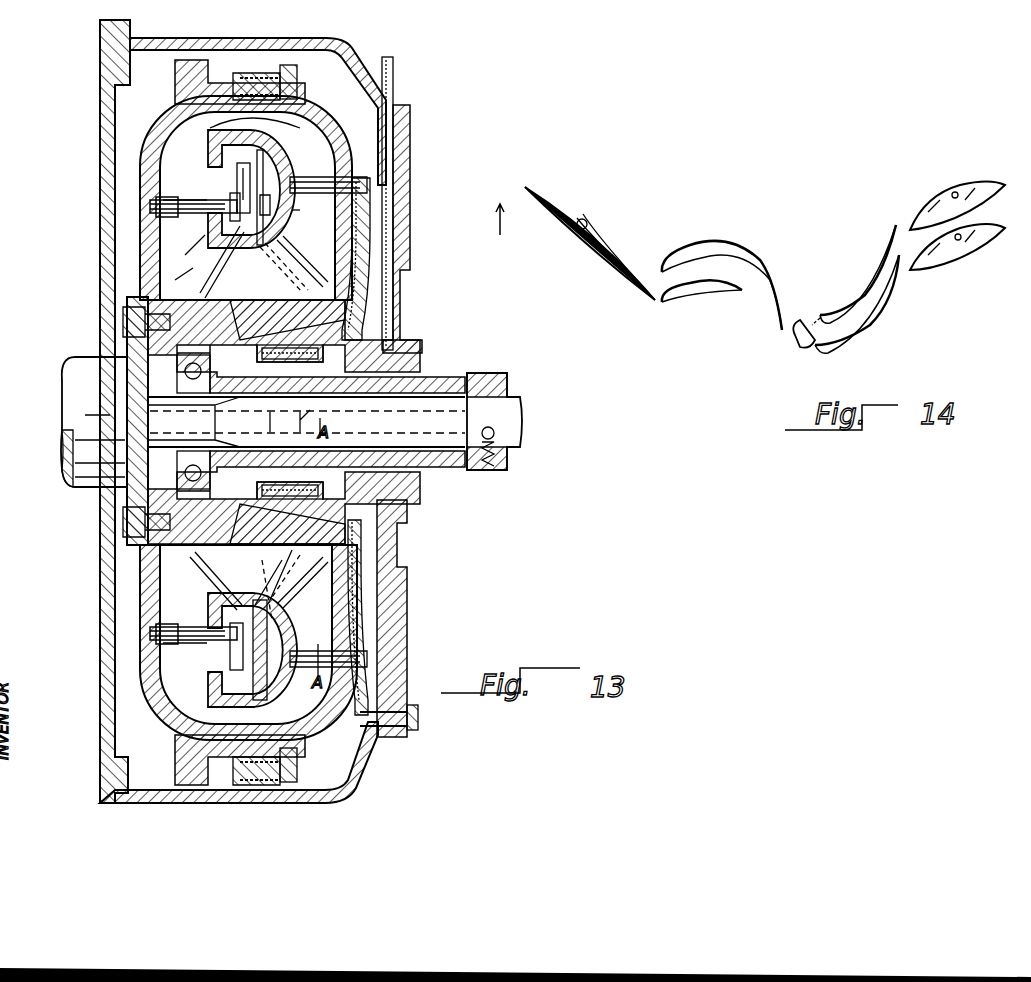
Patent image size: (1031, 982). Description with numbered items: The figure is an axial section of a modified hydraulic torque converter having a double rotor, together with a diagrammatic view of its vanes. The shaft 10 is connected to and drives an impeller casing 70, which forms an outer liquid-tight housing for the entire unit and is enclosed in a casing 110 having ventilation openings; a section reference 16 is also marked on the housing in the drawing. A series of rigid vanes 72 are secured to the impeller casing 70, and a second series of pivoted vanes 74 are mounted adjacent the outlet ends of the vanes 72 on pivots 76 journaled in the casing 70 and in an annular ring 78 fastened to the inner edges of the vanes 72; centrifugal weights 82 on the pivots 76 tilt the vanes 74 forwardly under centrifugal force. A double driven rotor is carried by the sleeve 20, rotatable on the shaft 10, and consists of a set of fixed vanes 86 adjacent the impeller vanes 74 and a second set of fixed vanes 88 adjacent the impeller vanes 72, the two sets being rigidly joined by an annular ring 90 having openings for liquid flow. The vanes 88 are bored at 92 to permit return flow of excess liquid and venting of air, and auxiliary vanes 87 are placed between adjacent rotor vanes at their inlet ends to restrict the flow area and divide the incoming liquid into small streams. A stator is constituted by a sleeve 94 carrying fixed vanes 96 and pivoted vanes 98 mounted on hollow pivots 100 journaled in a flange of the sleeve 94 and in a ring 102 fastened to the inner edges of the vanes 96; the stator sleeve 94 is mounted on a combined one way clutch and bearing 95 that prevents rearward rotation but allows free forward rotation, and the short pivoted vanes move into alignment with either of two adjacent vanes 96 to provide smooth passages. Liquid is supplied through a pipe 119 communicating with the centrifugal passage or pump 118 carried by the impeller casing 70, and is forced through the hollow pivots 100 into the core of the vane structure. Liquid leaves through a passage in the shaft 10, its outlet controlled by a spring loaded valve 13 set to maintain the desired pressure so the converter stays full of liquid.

In FIG. 13, the shaft 10 is at (75, 372).
In FIG. 13, the spring loaded valve 13 is at (505, 455).
In FIG. 13, the bolt 16 is at (230, 18).
In FIG. 13, the sleeve 20 is at (430, 377).
In FIG. 13, the impeller casing 70 is at (178, 118).
In FIG. 13, the rigid vanes 72 is at (207, 262).
In FIG. 14, the rigid vanes 72 is at (548, 198).
In FIG. 13, the pivoted vanes 74 is at (193, 400).
In FIG. 14, the pivoted vanes 74 is at (605, 245).
In FIG. 13, the pivots 76 is at (160, 215).
In FIG. 13, the annular ring 78 is at (187, 257).
In FIG. 13, the centrifugal weights 82 is at (238, 178).
In FIG. 13, the fixed vanes 86 is at (255, 117).
In FIG. 14, the fixed vanes 86 is at (675, 258).
In FIG. 14, the auxiliary vanes 87 is at (679, 292).
In FIG. 13, the fixed vanes 88 is at (270, 268).
In FIG. 14, the fixed vanes 88 is at (935, 252).
In FIG. 13, the annular ring 90 is at (278, 160).
In FIG. 13, the bore 92 is at (268, 580).
In FIG. 14, the bore 92 is at (960, 192).
In FIG. 13, the sleeve 94 is at (300, 446).
In FIG. 13, the combined one way clutch and bearing 95 is at (250, 422).
In FIG. 13, the fixed vanes 96 is at (302, 419).
In FIG. 14, the fixed vanes 96 is at (845, 310).
In FIG. 13, the pivoted vanes 98 is at (328, 422).
In FIG. 14, the pivoted vanes 98 is at (803, 318).
In FIG. 13, the hollow pivots 100 is at (276, 205).
In FIG. 13, the ring 102 is at (309, 217).
In FIG. 13, the casing 110 is at (340, 55).
In FIG. 13, the centrifugal pump 118 is at (355, 240).
In FIG. 13, the pipe 119 is at (393, 70).